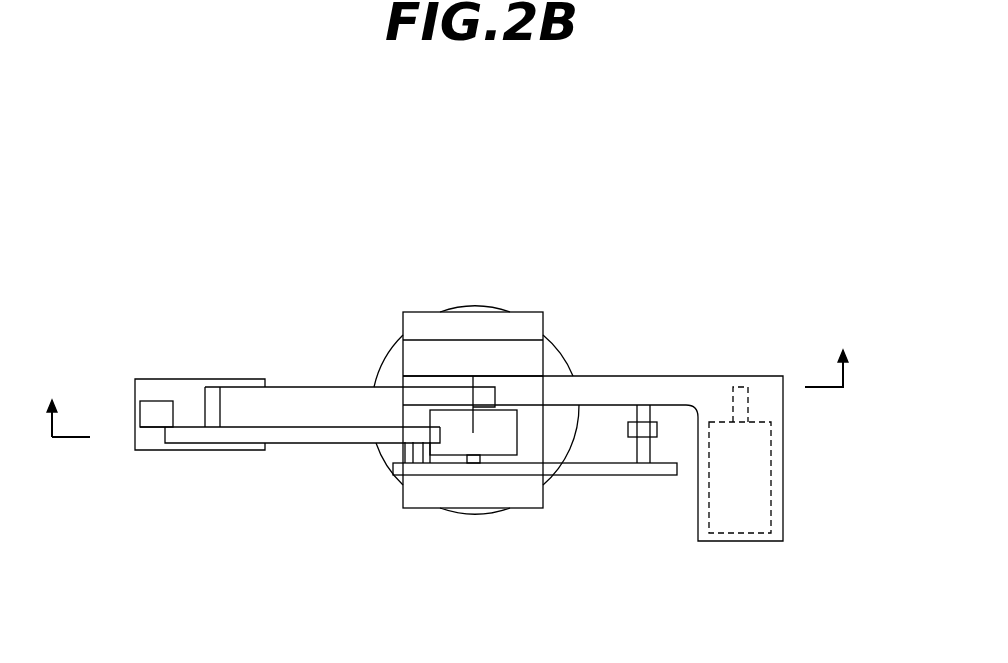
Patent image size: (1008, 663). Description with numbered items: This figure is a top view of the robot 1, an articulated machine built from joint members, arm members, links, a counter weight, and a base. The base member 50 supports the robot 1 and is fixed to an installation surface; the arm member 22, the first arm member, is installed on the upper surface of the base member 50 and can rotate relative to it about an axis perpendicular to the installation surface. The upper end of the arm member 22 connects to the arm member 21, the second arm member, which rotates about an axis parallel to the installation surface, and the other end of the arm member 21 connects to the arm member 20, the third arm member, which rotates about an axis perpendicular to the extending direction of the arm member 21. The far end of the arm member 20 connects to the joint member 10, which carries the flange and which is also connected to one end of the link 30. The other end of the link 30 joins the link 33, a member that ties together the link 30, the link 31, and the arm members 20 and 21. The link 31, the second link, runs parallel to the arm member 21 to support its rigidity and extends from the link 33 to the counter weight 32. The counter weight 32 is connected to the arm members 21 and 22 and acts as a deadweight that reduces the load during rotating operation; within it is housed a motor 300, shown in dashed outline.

The robot 1 is at (680, 224).
The joint member 10 is at (190, 397).
The arm member 20 is at (330, 412).
The arm member 21 is at (495, 440).
The arm member 22 is at (517, 323).
The link 30 is at (312, 437).
The link 31 is at (650, 432).
The counter weight 32 is at (728, 541).
The link 33 is at (598, 470).
The base member 50 is at (563, 353).
The motor 300 is at (783, 472).